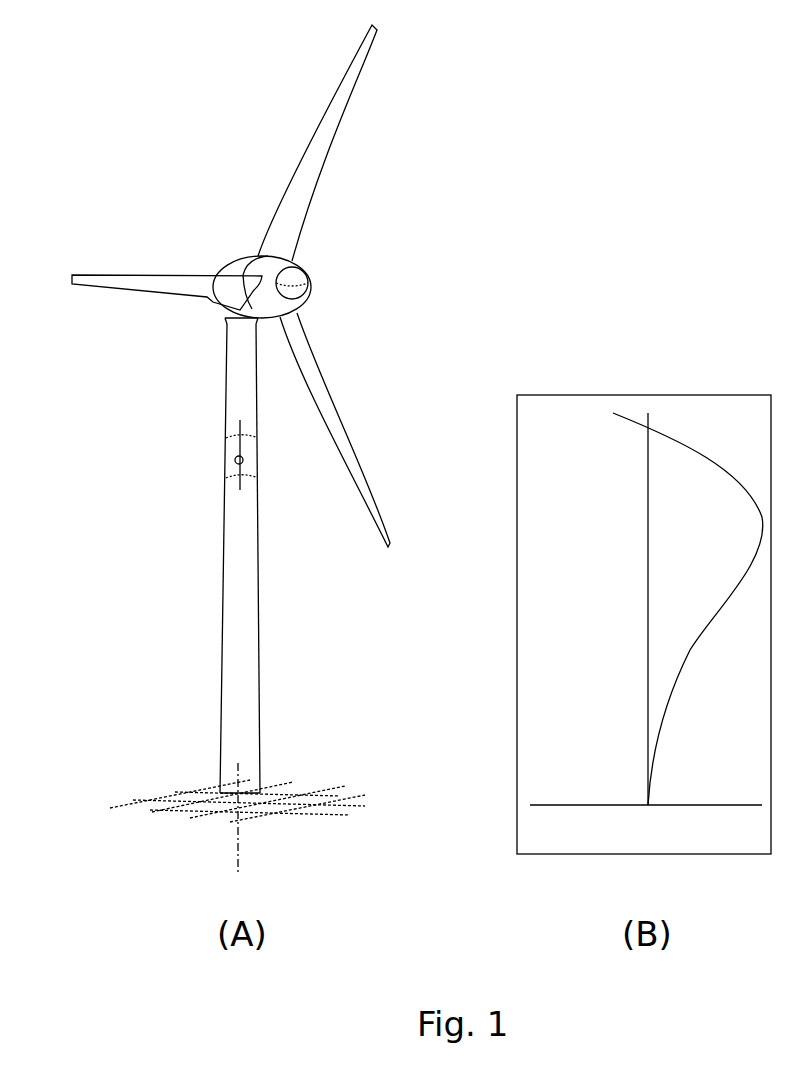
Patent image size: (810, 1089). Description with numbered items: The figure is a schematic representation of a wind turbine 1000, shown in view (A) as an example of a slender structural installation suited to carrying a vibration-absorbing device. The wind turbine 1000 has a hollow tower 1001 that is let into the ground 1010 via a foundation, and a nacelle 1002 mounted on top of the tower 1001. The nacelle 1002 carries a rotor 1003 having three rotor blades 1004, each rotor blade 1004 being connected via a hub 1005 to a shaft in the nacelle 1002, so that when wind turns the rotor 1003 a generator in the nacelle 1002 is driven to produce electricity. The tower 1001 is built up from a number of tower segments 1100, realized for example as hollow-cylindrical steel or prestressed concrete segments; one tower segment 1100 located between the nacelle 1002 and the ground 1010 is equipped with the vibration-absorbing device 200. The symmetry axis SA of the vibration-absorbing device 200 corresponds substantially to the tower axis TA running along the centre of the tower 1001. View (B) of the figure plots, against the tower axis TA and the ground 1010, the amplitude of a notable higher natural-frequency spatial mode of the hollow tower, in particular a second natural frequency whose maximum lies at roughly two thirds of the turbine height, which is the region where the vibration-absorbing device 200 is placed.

The wind turbine 1000 is at (100, 119).
The tower 1001 is at (223, 555).
The nacelle 1002 is at (227, 265).
The rotor 1003 is at (283, 258).
The rotor blade 1004 is at (348, 82).
The hub 1005 is at (308, 281).
The ground 1010 is at (310, 802).
The tower segment 1100 is at (227, 453).
The vibration-absorbing device 200 is at (252, 447).
The symmetry axis SA is at (227, 485).
The tower axis TA is at (238, 858).